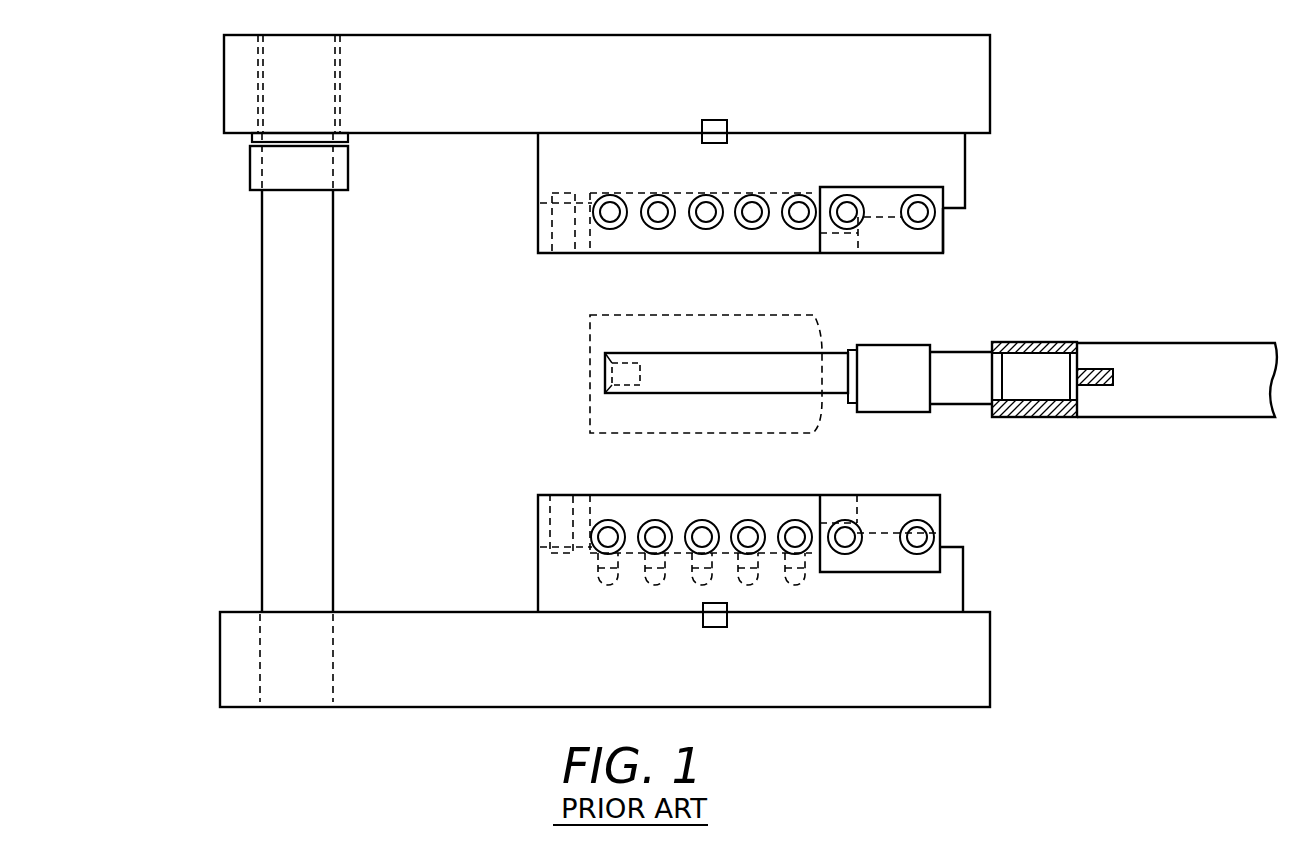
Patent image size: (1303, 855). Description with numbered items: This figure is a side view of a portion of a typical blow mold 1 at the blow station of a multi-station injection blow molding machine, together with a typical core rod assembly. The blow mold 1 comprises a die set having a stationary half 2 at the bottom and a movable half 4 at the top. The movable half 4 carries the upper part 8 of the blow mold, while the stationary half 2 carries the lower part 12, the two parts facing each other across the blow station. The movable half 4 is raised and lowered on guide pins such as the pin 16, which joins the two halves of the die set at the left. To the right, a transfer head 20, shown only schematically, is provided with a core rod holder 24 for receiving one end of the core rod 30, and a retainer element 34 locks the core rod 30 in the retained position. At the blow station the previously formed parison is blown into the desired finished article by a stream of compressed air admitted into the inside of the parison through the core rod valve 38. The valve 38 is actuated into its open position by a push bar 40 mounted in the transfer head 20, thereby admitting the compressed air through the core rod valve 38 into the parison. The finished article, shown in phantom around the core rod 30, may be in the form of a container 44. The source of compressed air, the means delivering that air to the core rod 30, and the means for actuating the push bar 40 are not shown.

The blow mold 1 is at (160, 414).
The stationary half 2 is at (458, 671).
The movable half 4 is at (575, 96).
The upper part 8 is at (880, 155).
The lower part 12 is at (565, 493).
The guide pin 16 is at (262, 477).
The transfer head 20 is at (1177, 350).
The core rod holder 24 is at (1047, 340).
The core rod 30 is at (880, 345).
The retainer element 34 is at (993, 342).
The core rod valve 38 is at (600, 370).
The push bar 40 is at (1102, 385).
The container 44 is at (675, 433).